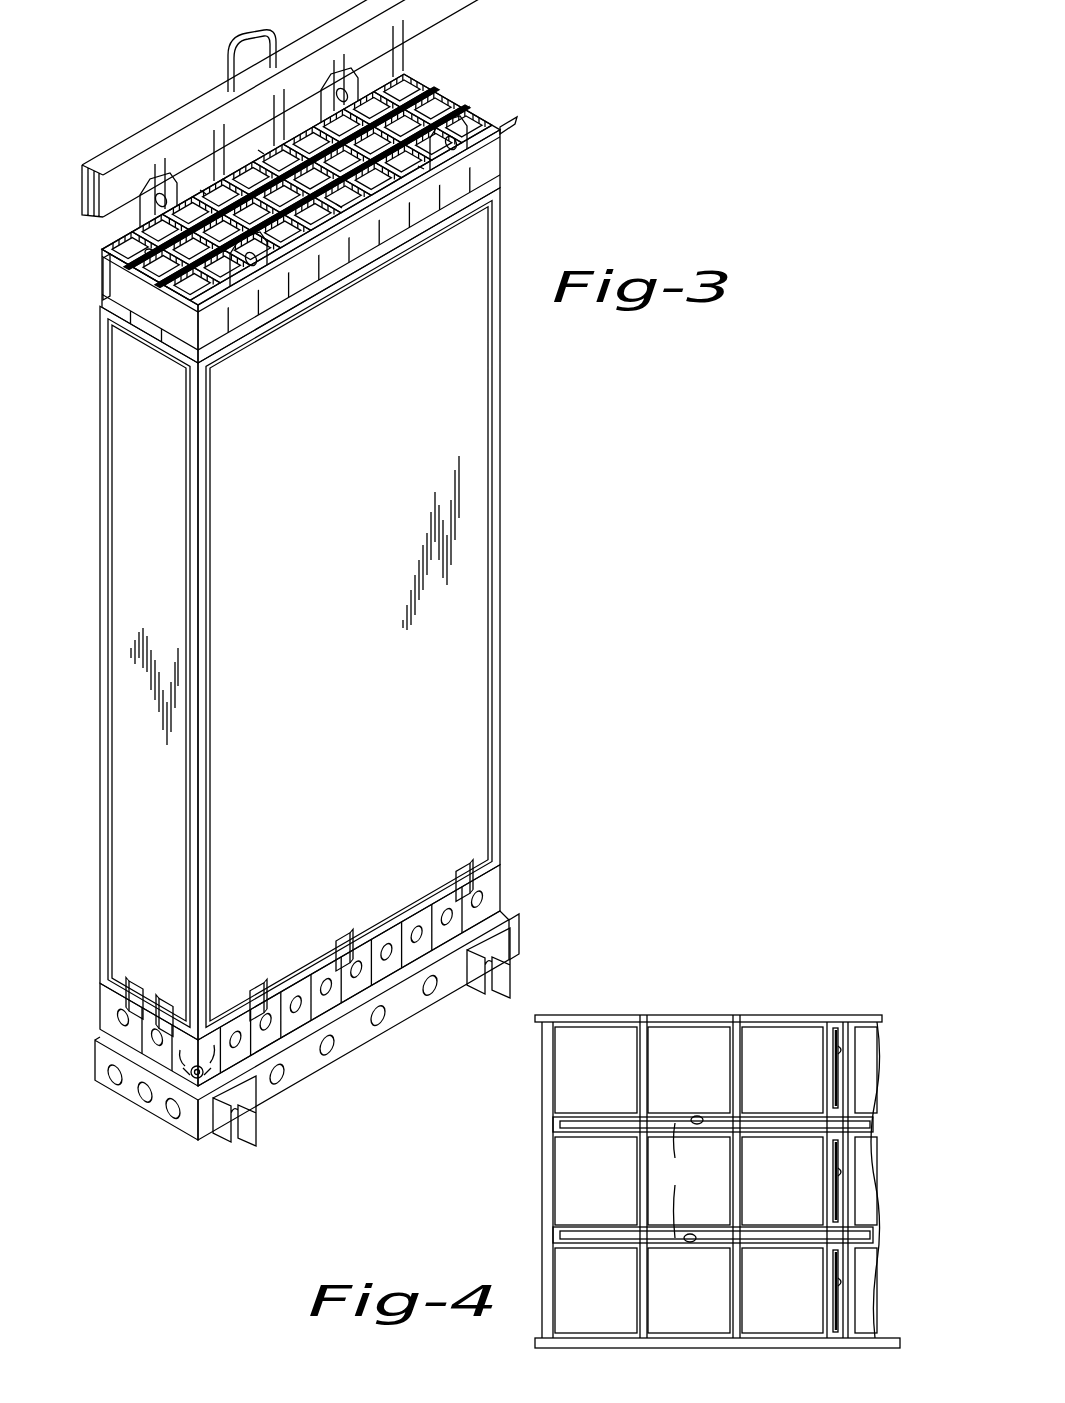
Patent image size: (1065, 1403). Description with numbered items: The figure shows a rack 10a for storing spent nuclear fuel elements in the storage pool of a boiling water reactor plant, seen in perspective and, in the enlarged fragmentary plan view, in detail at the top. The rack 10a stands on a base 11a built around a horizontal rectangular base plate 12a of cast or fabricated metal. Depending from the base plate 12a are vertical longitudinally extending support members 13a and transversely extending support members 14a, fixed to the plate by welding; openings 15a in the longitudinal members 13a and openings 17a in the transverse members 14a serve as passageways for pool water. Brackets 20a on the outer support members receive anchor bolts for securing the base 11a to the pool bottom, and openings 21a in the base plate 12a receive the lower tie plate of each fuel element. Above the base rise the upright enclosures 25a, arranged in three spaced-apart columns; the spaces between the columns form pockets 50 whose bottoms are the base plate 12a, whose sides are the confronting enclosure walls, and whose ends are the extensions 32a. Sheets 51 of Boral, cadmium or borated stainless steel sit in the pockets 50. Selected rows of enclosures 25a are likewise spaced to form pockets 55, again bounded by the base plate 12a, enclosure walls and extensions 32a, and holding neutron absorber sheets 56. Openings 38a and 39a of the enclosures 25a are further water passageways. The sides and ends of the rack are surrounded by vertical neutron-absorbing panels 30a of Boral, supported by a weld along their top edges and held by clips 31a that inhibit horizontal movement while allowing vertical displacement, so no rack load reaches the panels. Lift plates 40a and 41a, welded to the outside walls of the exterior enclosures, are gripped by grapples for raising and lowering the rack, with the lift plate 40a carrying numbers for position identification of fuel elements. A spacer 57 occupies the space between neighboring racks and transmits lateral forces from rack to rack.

In FIG. 3, the rack 10a is at (528, 425).
In FIG. 3, the base 11a is at (364, 1039).
In FIG. 3, the base plate 12a is at (505, 908).
In FIG. 3, the support members 13a is at (400, 1018).
In FIG. 3, the support members 14a is at (95, 1080).
In FIG. 3, the openings 15a is at (285, 1074).
In FIG. 3, the openings 17a is at (173, 1114).
In FIG. 3, the brackets 20a is at (512, 972).
In FIG. 3, the openings 21a is at (125, 1028).
In FIG. 3, the enclosures 25a is at (462, 215).
In FIG. 4, the enclosures 25a is at (553, 1095).
In FIG. 3, the panels 30a is at (178, 552).
In FIG. 3, the clips 31a is at (475, 862).
In FIG. 3, the extensions 32a is at (470, 112).
In FIG. 4, the extensions 32a is at (555, 1127).
In FIG. 3, the openings 38a is at (120, 1016).
In FIG. 3, the openings 39a is at (490, 893).
In FIG. 3, the lift plate 40a is at (372, 90).
In FIG. 4, the lift plate 40a is at (752, 1015).
In FIG. 3, the lift plate 41a is at (505, 150).
In FIG. 4, the lift plate 41a is at (540, 1342).
In FIG. 3, the pockets 50 is at (146, 252).
In FIG. 4, the pockets 50 is at (693, 1116).
In FIG. 3, the sheets 51 is at (440, 88).
In FIG. 4, the sheets 51 is at (677, 1180).
In FIG. 3, the pockets 55 is at (202, 192).
In FIG. 4, the pockets 55 is at (833, 1050).
In FIG. 3, the sheets 56 is at (262, 152).
In FIG. 4, the sheets 56 is at (833, 1093).
In FIG. 3, the spacer 57 is at (103, 160).